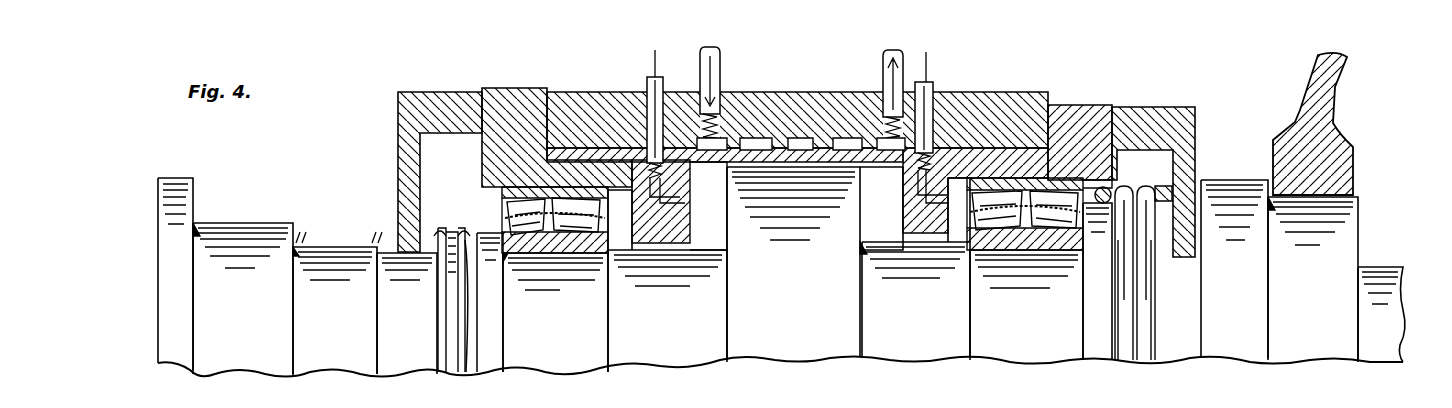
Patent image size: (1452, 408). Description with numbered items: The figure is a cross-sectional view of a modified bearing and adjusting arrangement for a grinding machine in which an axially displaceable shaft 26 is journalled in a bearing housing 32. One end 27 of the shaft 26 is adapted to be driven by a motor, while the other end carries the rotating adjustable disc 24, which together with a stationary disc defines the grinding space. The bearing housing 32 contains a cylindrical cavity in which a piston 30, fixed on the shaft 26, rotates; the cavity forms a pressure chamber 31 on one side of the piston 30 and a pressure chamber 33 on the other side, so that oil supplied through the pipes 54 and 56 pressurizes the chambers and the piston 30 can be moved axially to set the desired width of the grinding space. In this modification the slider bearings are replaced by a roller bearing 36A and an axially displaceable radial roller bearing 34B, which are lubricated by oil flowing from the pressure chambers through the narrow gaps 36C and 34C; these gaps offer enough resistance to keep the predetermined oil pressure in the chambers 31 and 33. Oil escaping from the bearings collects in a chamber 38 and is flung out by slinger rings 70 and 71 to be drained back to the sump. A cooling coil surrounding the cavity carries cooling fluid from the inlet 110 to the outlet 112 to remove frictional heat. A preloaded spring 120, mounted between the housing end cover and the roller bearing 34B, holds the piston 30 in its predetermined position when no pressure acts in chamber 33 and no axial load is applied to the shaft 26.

The rotating adjustable disc 24 is at (1315, 95).
The axially displaceable shaft 26 is at (1385, 277).
The shaft end 27 is at (243, 228).
The piston 30 is at (808, 312).
The pressure chamber 31 is at (698, 173).
The bearing housing 32 is at (1090, 115).
The pressure chamber 33 is at (873, 193).
The axially displaceable radial roller bearing 34B is at (987, 315).
The narrow gap 34C is at (893, 232).
The roller bearing 36A is at (590, 292).
The narrow gap 36C is at (695, 242).
The chamber 38 is at (432, 150).
The pipe 54 is at (647, 80).
The pipe 56 is at (937, 90).
The slinger ring 70 is at (447, 230).
The slinger ring 71 is at (1147, 352).
The cooling fluid inlet 110 is at (722, 72).
The cooling fluid outlet 112 is at (883, 65).
The preloaded spring 120 is at (1160, 187).